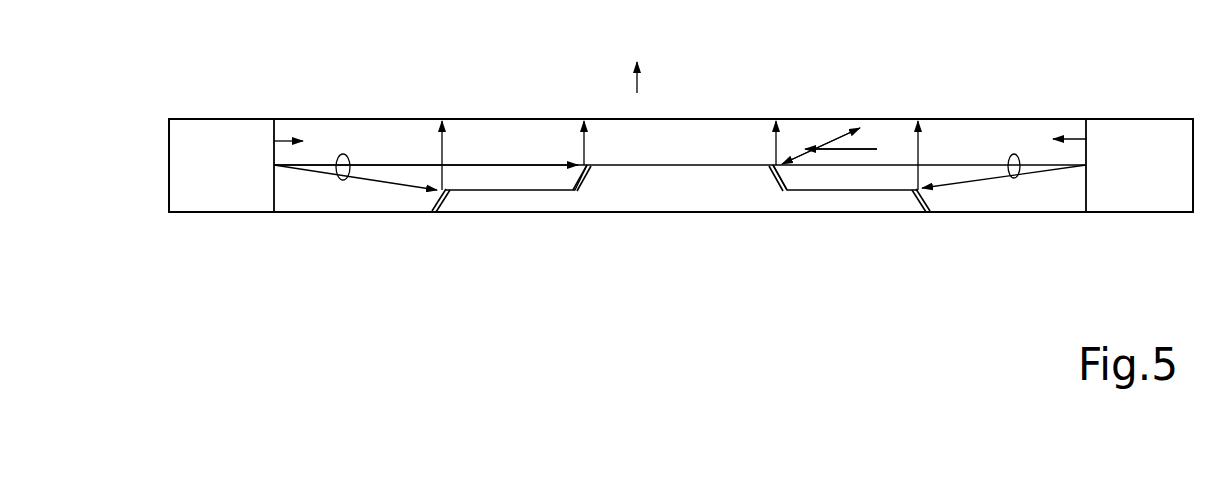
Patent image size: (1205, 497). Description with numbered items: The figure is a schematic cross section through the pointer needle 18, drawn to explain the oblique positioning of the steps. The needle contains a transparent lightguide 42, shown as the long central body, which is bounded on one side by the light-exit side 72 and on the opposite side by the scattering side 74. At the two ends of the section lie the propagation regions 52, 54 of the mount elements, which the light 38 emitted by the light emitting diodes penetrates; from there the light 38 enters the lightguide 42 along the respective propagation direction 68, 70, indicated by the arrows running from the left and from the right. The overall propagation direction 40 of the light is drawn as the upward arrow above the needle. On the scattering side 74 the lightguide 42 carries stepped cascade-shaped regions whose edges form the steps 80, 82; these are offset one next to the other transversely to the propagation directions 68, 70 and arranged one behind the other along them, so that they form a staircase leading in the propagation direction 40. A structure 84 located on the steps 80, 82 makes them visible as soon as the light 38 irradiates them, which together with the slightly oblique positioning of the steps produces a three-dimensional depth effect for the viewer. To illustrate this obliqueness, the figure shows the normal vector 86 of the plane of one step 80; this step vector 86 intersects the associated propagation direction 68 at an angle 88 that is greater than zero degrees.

The pointer needle 18 is at (435, 312).
The light 38 is at (338, 180).
The propagation direction 40 is at (640, 82).
The lightguide 42 is at (375, 118).
The propagation region 52 is at (1127, 135).
The propagation region 54 is at (235, 140).
The propagation direction 68 is at (1077, 138).
The propagation direction 70 is at (290, 140).
The light-exit side 72 is at (535, 118).
The scattering side 74 is at (562, 268).
The step 80 is at (763, 175).
The step 82 is at (450, 203).
The structure 84 is at (436, 212).
The normal vector 86 is at (800, 170).
The angle 88 is at (838, 150).